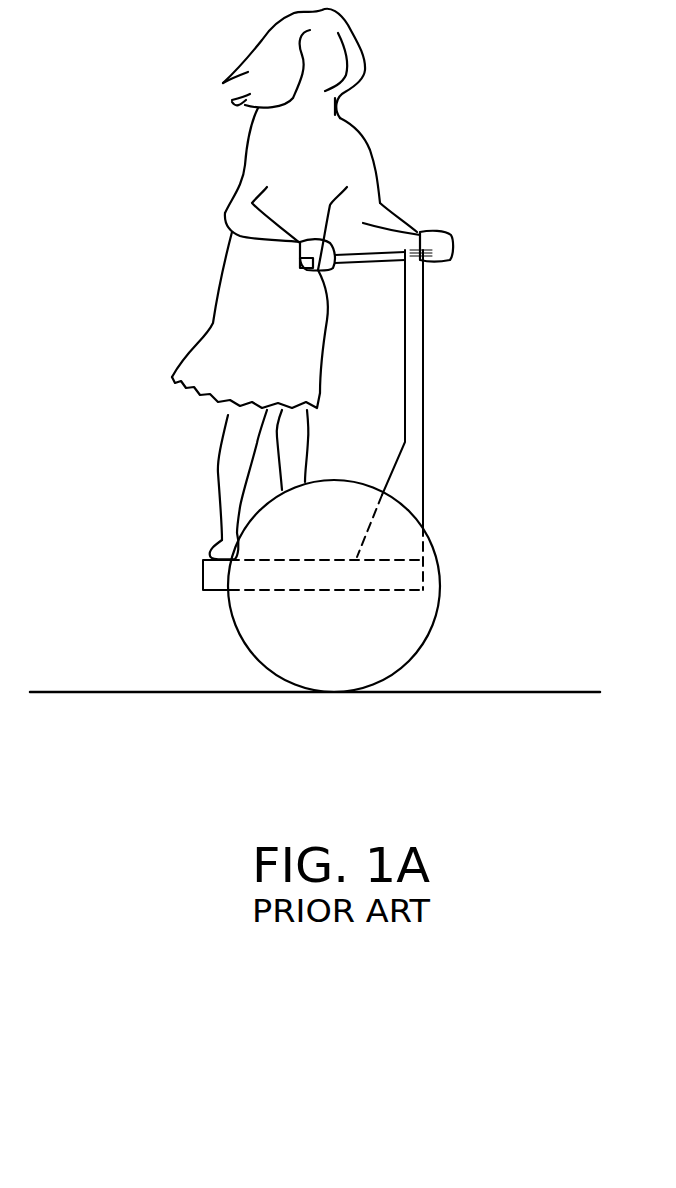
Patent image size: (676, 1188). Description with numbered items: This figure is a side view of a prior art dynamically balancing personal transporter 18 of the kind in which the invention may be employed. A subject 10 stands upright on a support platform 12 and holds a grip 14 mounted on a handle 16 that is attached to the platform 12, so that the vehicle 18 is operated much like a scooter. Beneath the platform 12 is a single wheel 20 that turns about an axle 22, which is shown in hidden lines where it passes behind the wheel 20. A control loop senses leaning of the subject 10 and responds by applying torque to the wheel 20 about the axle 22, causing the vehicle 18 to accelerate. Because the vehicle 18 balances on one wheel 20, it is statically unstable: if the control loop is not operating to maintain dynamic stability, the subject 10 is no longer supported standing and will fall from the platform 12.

The subject 10 is at (265, 133).
The support platform 12 is at (203, 574).
The grip 14 is at (427, 258).
The handle 16 is at (425, 343).
The personal transporter 18 is at (480, 406).
The wheel 20 is at (439, 614).
The axle 22 is at (335, 594).